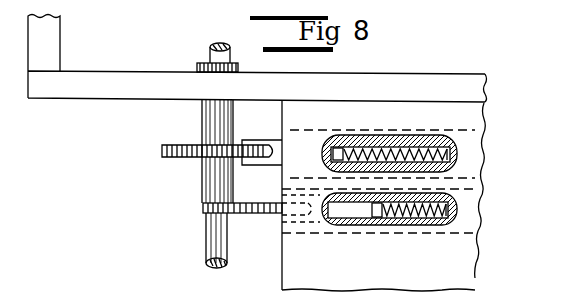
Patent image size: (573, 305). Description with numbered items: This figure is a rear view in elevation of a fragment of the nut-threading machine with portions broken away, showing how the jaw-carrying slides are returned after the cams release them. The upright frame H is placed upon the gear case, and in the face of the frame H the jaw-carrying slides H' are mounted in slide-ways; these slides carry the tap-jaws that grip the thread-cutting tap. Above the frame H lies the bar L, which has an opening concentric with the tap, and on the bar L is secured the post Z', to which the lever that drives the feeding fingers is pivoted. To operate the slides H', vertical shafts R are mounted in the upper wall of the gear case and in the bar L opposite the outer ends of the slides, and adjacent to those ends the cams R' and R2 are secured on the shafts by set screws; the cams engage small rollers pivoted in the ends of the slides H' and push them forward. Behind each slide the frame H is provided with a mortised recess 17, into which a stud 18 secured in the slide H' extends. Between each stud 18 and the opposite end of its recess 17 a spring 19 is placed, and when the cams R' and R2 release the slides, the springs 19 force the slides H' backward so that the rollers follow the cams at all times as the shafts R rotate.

The bar L is at (86, 97).
The post Z' is at (44, 43).
The upright frame H is at (400, 195).
The jaw-carrying slides H' is at (385, 195).
The mortised recess 17 is at (395, 147).
The stud 18 is at (338, 150).
The springs 19 is at (435, 153).
The vertical shafts R is at (198, 184).
The cam R' is at (203, 152).
The cam R2 is at (202, 208).